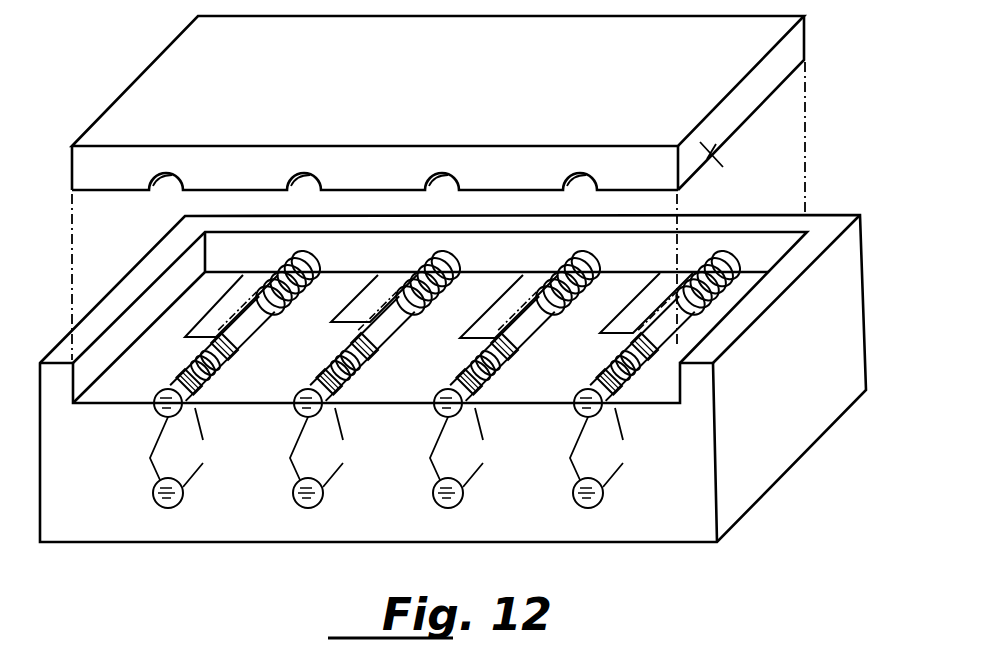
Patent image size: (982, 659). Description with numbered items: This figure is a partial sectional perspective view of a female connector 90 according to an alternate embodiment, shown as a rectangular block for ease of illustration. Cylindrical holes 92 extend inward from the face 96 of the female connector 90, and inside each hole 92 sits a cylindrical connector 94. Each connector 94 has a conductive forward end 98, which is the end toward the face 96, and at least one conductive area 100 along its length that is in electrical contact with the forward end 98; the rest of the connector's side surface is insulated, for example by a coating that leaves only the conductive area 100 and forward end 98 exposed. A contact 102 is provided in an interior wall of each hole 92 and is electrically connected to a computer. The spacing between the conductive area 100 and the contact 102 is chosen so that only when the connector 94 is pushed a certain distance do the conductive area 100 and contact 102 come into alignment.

The female connector 90 is at (779, 517).
The cylindrical hole 92 is at (363, 462).
The cylindrical connector 94 is at (411, 447).
The face 96 is at (662, 508).
The conductive forward end 98 is at (582, 419).
The conductive area 100 is at (609, 366).
The contact 102 is at (650, 345).